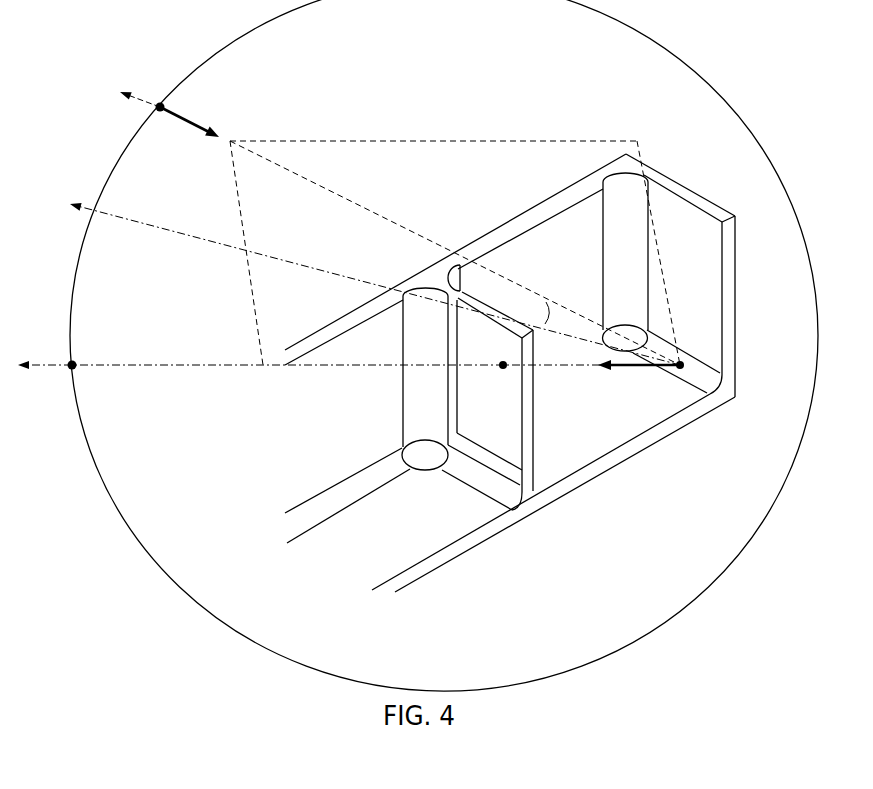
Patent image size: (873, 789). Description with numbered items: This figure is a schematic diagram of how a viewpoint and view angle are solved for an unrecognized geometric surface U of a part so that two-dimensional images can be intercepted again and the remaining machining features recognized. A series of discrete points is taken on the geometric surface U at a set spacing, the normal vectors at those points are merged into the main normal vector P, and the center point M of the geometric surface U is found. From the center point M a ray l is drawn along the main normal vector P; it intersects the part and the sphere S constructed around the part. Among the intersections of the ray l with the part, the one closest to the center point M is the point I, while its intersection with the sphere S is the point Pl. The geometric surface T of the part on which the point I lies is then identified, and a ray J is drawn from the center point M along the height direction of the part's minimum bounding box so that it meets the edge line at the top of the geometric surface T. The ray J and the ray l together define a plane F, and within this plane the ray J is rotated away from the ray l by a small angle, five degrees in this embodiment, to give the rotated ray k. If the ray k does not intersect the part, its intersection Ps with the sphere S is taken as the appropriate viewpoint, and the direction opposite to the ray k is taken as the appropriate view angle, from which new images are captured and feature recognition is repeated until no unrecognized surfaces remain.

The sphere S is at (683, 62).
The plane F is at (432, 140).
The geometric surface T is at (472, 297).
The geometric surface U is at (708, 380).
The ray l is at (349, 349).
The ray J is at (369, 268).
The rotated ray k is at (139, 83).
The intersection point Ps is at (161, 127).
The intersection point Pl is at (61, 385).
The intersection point I is at (503, 381).
The center point M is at (695, 346).
The main normal vector P is at (634, 380).